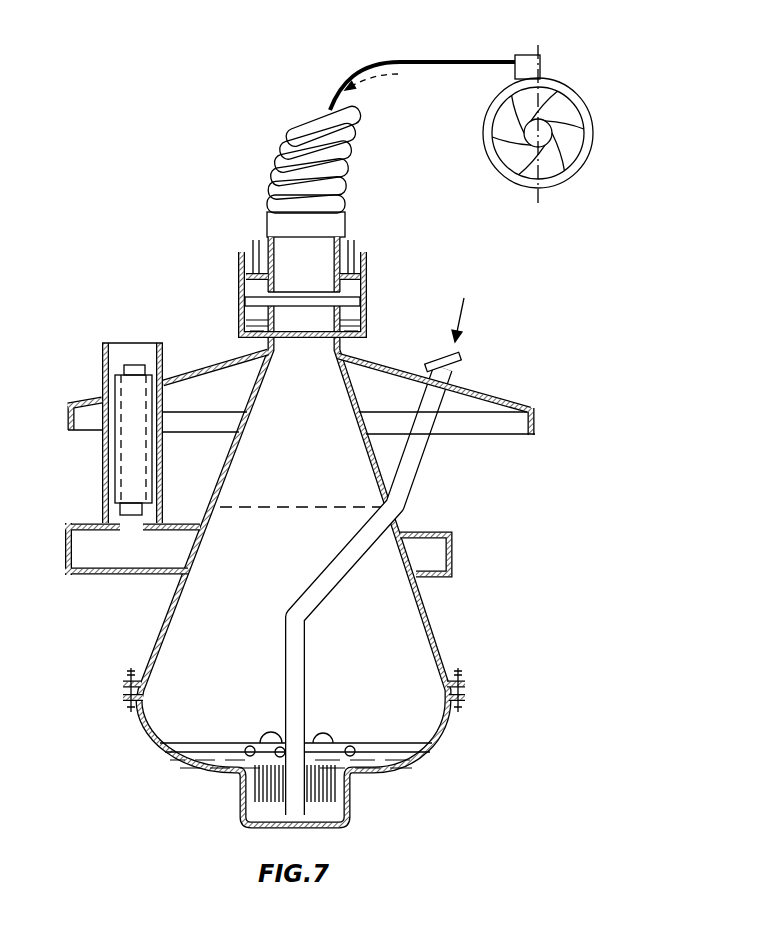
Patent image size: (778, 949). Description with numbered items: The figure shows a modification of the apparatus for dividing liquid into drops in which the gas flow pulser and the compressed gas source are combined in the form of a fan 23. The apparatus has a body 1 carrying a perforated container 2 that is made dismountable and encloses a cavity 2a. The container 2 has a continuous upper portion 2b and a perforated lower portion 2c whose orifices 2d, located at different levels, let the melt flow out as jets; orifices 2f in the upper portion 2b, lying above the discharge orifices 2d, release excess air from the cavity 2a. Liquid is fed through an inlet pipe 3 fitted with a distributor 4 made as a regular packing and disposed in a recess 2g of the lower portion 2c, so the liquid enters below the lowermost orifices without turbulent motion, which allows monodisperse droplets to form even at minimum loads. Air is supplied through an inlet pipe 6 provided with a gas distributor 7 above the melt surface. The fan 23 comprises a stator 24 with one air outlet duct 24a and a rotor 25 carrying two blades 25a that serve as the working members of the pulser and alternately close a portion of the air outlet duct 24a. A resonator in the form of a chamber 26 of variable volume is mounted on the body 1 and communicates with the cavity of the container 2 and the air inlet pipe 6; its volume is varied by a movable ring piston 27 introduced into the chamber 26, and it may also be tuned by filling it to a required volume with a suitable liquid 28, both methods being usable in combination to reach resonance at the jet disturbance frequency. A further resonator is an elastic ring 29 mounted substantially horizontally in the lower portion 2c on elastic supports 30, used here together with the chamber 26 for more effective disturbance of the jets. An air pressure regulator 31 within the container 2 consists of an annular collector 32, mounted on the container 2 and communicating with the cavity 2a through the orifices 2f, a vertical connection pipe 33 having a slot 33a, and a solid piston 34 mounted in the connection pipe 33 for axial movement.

The body 1 is at (506, 408).
The perforated container 2 is at (475, 658).
The cavity 2a is at (413, 653).
The upper portion 2b is at (431, 613).
The lower portion 2c is at (470, 697).
The orifices 2d is at (450, 728).
The orifices 2f is at (203, 550).
The recess 2g is at (252, 826).
The inlet pipe 3 is at (419, 453).
The distributor 4 is at (262, 791).
The inlet pipe 6 is at (336, 229).
The gas distributor 7 is at (240, 507).
The fan 23 is at (600, 92).
The stator 24 is at (562, 170).
The air outlet duct 24a is at (520, 62).
The rotor 25 is at (500, 160).
The blades 25a is at (503, 133).
The chamber 26 is at (368, 294).
The movable ring piston 27 is at (367, 268).
The liquid 28 is at (367, 328).
The elastic ring 29 is at (354, 750).
The elastic supports 30 is at (326, 727).
The air pressure regulator 31 is at (116, 478).
The annular collector 32 is at (95, 575).
The vertical connection pipe 33 is at (108, 470).
The slot 33a is at (142, 509).
The solid piston 34 is at (118, 380).